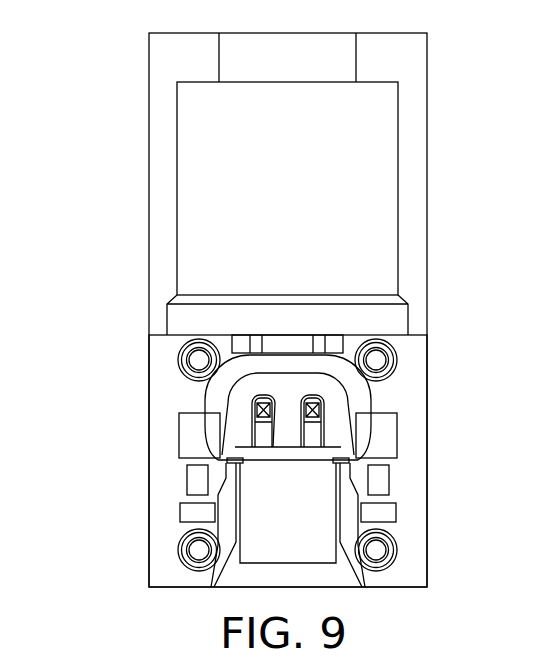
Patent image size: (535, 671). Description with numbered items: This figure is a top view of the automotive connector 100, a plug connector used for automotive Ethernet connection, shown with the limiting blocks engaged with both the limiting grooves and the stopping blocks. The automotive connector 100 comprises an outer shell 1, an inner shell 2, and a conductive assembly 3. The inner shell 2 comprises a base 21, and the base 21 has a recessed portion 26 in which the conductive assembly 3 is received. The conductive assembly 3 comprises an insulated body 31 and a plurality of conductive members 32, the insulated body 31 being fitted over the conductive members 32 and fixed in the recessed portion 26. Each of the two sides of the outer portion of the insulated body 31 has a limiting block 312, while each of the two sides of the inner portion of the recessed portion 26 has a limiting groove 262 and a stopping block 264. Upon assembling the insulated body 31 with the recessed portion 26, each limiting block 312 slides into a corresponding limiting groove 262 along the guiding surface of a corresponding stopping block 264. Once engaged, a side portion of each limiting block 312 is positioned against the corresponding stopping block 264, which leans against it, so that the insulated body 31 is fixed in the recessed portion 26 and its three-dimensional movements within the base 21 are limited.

The automotive connector 100 is at (72, 283).
The outer shell 1 is at (365, 207).
The inner shell 2 is at (428, 540).
The base 21 is at (165, 527).
The recessed portion 26 is at (290, 495).
The limiting groove 262 is at (217, 450).
The stopping block 264 is at (227, 465).
The conductive assembly 3 is at (203, 425).
The insulated body 31 is at (362, 393).
The limiting block 312 is at (347, 450).
The conductive member 32 is at (258, 407).